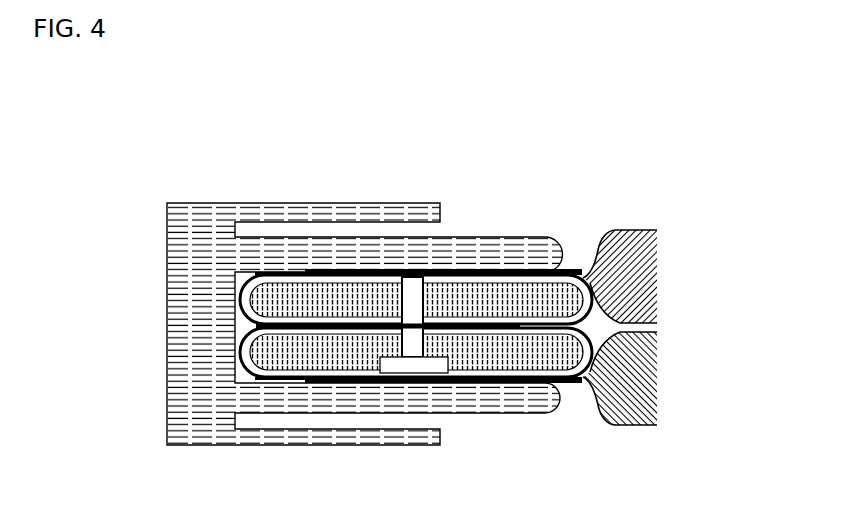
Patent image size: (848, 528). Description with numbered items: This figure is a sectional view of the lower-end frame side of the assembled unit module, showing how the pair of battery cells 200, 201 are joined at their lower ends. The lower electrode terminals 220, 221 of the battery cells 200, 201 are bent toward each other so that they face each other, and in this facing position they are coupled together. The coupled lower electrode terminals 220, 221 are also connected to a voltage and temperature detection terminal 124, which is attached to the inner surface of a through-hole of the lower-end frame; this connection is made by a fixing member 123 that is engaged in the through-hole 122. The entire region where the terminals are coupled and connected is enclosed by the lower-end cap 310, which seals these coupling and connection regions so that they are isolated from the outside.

The lower-end cap 310 is at (166, 287).
The lower electrode terminal 220 is at (253, 277).
The lower electrode terminal 221 is at (237, 370).
The voltage and temperature detection terminal 124 is at (422, 310).
The through-hole 122 is at (423, 280).
The fixing member 123 is at (423, 365).
The battery cell 200 is at (635, 230).
The battery cell 201 is at (645, 398).